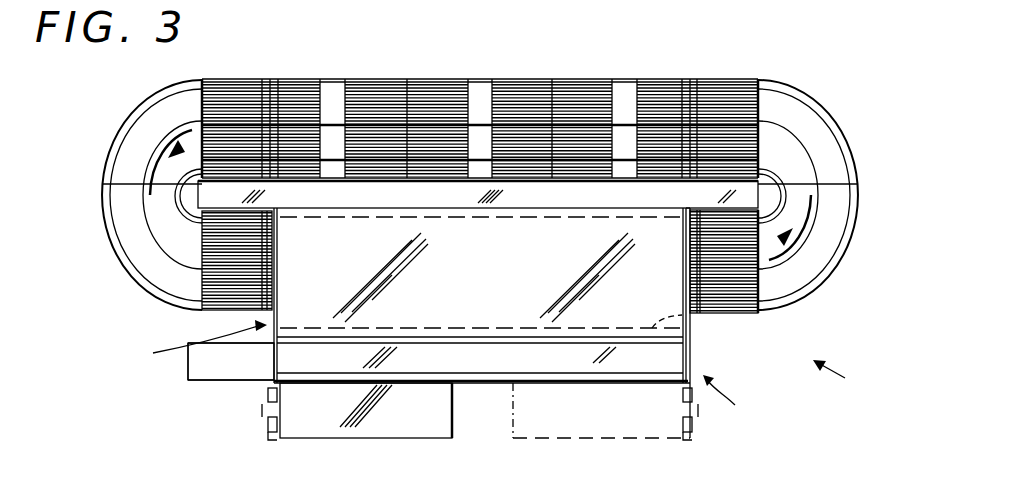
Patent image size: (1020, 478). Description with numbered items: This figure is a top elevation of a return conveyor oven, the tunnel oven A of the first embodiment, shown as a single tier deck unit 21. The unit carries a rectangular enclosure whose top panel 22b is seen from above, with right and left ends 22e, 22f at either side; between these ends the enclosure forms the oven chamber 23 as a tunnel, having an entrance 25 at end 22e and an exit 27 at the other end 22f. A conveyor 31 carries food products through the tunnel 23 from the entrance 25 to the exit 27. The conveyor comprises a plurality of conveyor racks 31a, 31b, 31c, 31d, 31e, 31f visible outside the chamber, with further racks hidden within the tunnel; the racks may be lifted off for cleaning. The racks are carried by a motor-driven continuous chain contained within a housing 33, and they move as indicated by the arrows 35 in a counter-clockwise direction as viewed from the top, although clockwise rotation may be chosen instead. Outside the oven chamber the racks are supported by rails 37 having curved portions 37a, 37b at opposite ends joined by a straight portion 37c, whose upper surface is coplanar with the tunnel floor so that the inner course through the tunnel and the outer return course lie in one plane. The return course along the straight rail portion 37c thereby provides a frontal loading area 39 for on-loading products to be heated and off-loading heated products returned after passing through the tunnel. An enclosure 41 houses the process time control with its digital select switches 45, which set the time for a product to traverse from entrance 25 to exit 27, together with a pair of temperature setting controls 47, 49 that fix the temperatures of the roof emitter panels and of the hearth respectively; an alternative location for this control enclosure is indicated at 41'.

The tier deck unit 21 is at (518, 403).
The top panel 22b is at (508, 287).
The right end 22e is at (272, 330).
The left end 22f is at (690, 327).
The oven chamber 23 is at (700, 320).
The entrance 25 is at (197, 344).
The exit 27 is at (700, 288).
The conveyor 31 is at (760, 110).
The conveyor rack 31a is at (765, 282).
The conveyor rack 31b is at (707, 80).
The conveyor rack 31c is at (573, 82).
The conveyor rack 31d is at (427, 80).
The conveyor rack 31e is at (310, 80).
The conveyor rack 31f is at (200, 283).
The housing 33 is at (200, 196).
The arrows 35 is at (188, 140).
The rails 37 is at (812, 148).
The curved portion 37a is at (860, 187).
The curved portion 37b is at (98, 206).
The straight portion 37c is at (630, 80).
The frontal loading area 39 is at (485, 70).
The enclosure 41 is at (366, 430).
The alternative enclosure location 41' is at (601, 430).
The digital select switches 45 is at (270, 432).
The temperature setting control 47 is at (270, 385).
The temperature setting control 49 is at (267, 402).
The tunnel oven A is at (837, 379).